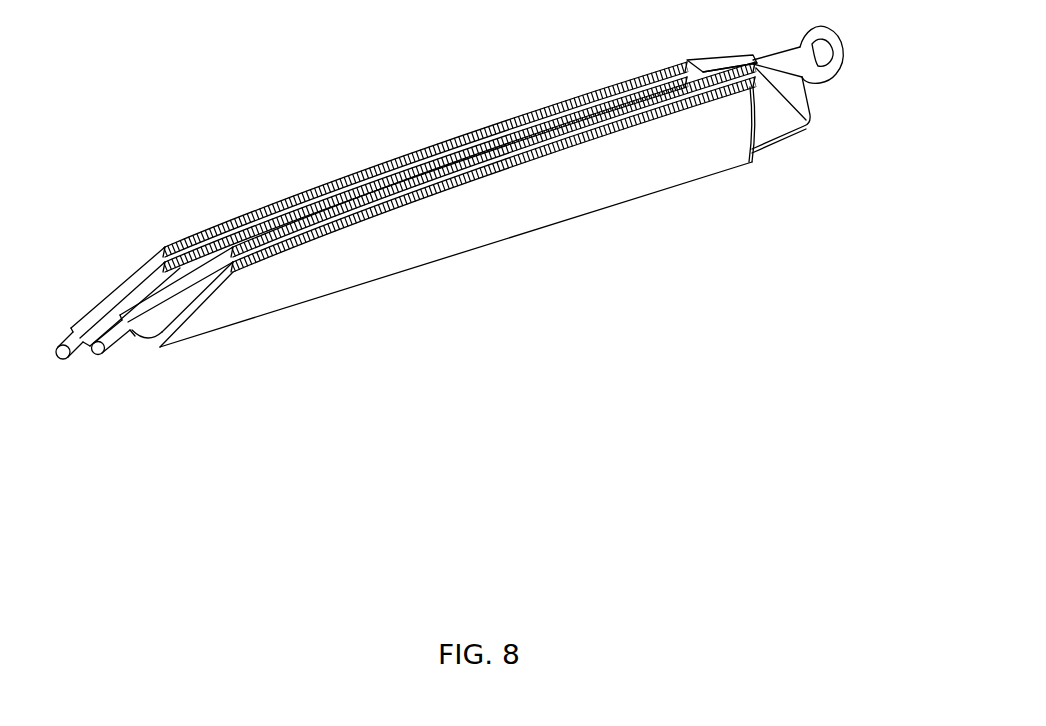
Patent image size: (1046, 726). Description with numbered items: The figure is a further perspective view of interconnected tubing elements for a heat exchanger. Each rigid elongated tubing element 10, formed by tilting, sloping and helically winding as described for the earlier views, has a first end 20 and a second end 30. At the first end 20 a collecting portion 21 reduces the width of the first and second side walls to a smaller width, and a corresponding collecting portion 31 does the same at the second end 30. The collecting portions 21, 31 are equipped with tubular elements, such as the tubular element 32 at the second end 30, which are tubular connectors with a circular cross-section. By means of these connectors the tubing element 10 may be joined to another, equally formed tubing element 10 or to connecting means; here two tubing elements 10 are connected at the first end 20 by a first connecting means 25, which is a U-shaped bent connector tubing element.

The tubing element 10 is at (427, 148).
The first end 20 is at (690, 62).
The collecting portion 21 is at (708, 72).
The first connecting means 25 is at (823, 40).
The second end 30 is at (127, 285).
The collecting portion 31 is at (95, 317).
The tubular element 32 is at (70, 340).